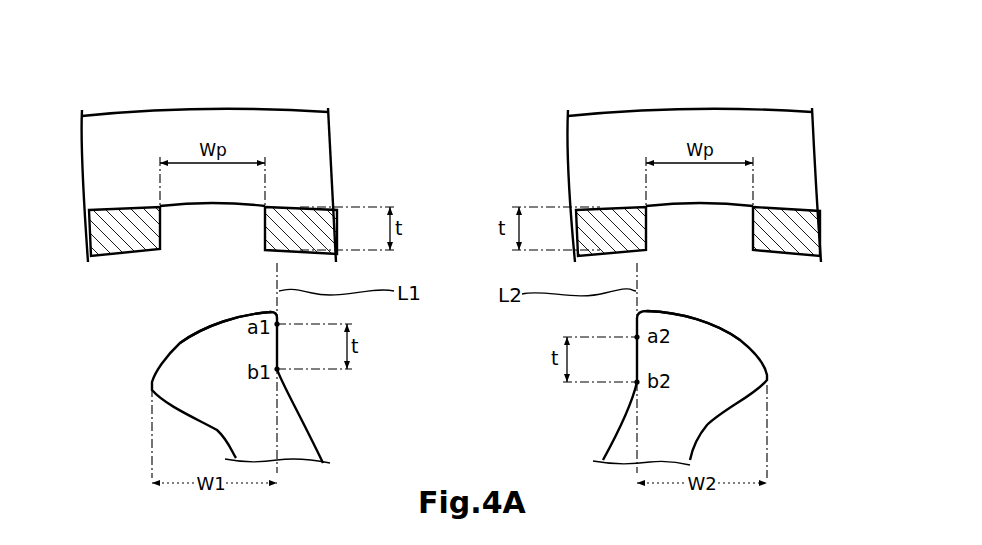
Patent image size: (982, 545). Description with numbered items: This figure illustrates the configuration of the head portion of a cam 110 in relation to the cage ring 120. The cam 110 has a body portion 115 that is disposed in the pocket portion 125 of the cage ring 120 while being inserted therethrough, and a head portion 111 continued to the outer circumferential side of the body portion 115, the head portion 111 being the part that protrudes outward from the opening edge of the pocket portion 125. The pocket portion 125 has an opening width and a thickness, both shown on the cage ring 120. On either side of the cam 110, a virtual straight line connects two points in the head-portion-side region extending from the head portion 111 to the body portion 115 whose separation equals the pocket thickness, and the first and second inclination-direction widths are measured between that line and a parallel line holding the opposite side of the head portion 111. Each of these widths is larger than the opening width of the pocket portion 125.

The cage ring 120 is at (247, 123).
The pocket portion 125 is at (178, 241).
The cam 110 is at (157, 368).
The head portion 111 is at (223, 333).
The body portion 115 is at (307, 449).